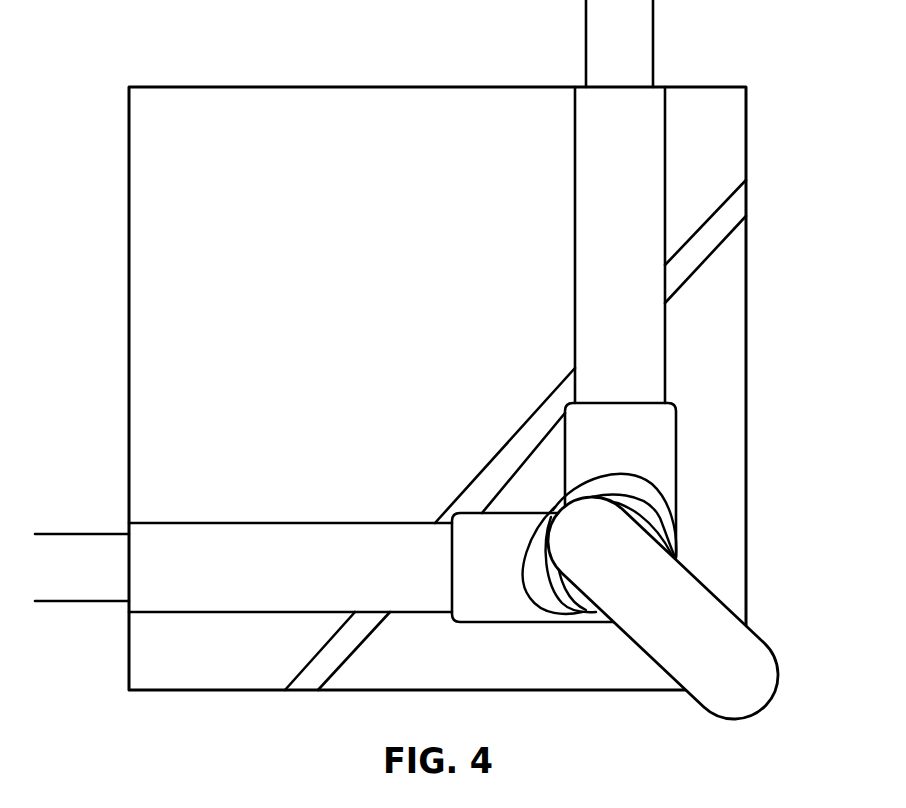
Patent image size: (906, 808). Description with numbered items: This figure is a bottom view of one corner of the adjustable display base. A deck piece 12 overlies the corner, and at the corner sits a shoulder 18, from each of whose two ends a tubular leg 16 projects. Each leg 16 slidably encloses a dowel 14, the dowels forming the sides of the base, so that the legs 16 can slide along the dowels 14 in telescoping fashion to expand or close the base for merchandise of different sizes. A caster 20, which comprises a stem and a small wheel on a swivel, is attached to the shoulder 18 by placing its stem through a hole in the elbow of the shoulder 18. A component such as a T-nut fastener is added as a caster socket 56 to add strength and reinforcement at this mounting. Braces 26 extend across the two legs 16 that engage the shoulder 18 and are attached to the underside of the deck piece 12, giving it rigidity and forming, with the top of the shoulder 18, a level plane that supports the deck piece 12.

The deck piece 12 is at (730, 163).
The dowel 14 is at (636, 36).
The tubular leg 16 is at (213, 590).
The shoulder 18 is at (657, 450).
The caster 20 is at (757, 677).
The brace 26 is at (695, 252).
The caster socket 56 is at (548, 604).